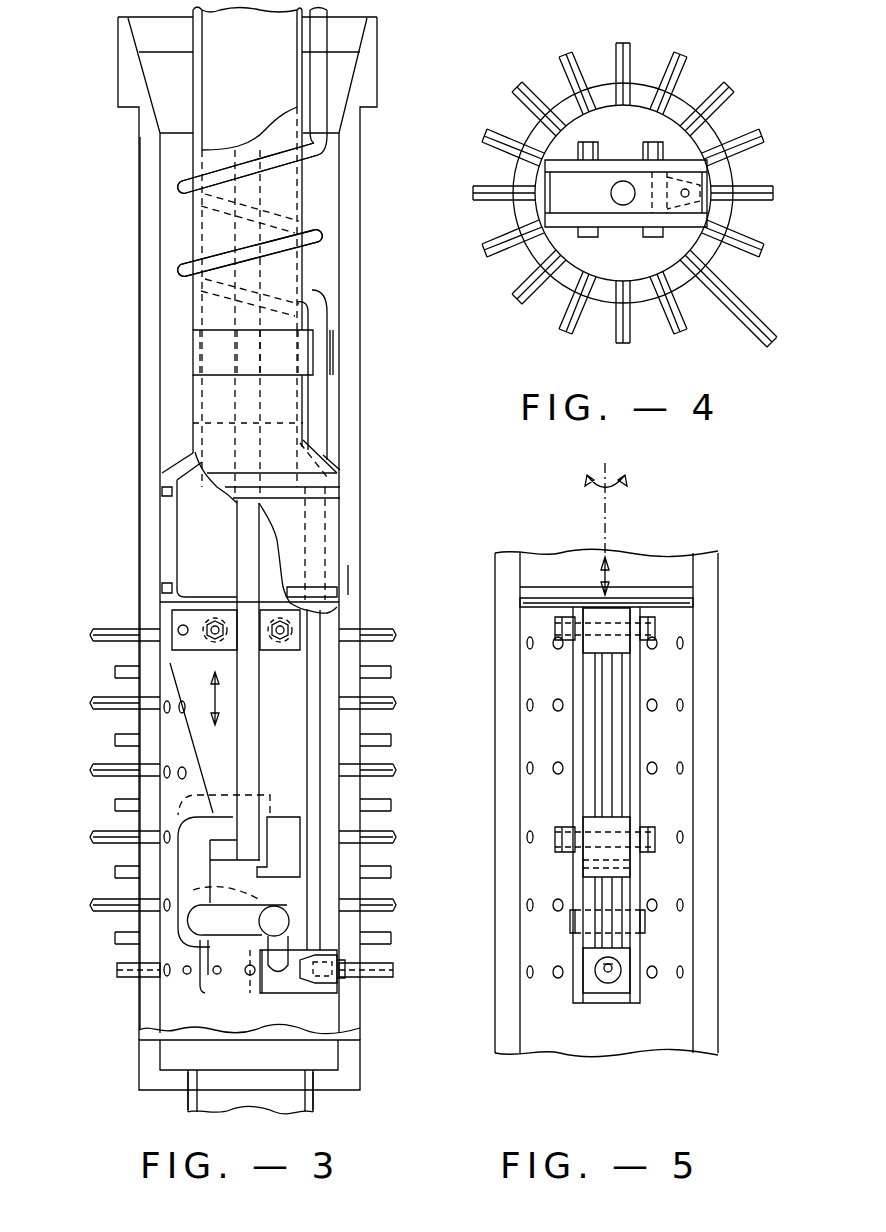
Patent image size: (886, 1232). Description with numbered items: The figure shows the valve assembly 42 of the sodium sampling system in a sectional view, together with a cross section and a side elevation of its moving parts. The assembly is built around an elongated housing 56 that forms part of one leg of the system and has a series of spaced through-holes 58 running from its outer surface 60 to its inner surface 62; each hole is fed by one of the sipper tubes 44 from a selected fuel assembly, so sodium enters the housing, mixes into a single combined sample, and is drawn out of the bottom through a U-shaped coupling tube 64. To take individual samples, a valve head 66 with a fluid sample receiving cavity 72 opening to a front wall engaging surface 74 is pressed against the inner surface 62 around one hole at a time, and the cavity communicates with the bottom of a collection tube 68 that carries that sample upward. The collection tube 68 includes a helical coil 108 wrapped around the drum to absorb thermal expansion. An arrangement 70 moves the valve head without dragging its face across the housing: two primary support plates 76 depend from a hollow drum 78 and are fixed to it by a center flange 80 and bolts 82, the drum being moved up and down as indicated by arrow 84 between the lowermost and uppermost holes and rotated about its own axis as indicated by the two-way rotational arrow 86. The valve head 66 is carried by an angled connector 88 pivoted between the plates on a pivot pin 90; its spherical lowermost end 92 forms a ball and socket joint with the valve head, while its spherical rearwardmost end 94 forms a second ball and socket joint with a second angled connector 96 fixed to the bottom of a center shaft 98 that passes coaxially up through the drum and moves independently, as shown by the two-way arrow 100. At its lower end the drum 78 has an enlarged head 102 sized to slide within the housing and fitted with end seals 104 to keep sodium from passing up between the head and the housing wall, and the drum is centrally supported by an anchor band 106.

In FIG. 3, the valve assembly 42 is at (422, 551).
In FIG. 3, the sipper tubes 44 is at (393, 640).
In FIG. 4, the sipper tubes 44 is at (630, 340).
In FIG. 3, the elongated housing 56 is at (355, 418).
In FIG. 4, the elongated housing 56 is at (602, 297).
In FIG. 3, the through-holes 58 is at (182, 774).
In FIG. 3, the outer surface 60 is at (362, 604).
In FIG. 3, the inner surface 62 is at (165, 727).
In FIG. 3, the U-shaped coupling tube 64 is at (313, 1106).
In FIG. 3, the valve head 66 is at (281, 995).
In FIG. 3, the collection tube 68 is at (265, 680).
In FIG. 3, the arrangement for moving the valve head 70 is at (174, 958).
In FIG. 3, the fluid sample receiving cavity 72 is at (316, 985).
In FIG. 3, the front wall engaging surface 74 is at (336, 985).
In FIG. 5, the front wall engaging surface 74 is at (623, 988).
In FIG. 4, the primary support plates 76 is at (622, 163).
In FIG. 5, the primary support plates 76 is at (573, 804).
In FIG. 3, the drum 78 is at (305, 273).
In FIG. 5, the drum 78 is at (685, 578).
In FIG. 5, the center flange 80 is at (623, 647).
In FIG. 5, the bolts 82 is at (650, 632).
In FIG. 5, the arrow 84 is at (605, 574).
In FIG. 5, the two-way rotational arrow 86 is at (587, 492).
In FIG. 3, the angled connector 88 is at (232, 915).
In FIG. 5, the pivot pin 90 is at (645, 923).
In FIG. 3, the lowermost end 92 is at (292, 972).
In FIG. 3, the rearwardmost end 94 is at (205, 930).
In FIG. 3, the second angled connector 96 is at (185, 855).
In FIG. 3, the shaft 98 is at (245, 664).
In FIG. 3, the two-way arrow 100 is at (207, 693).
In FIG. 3, the enlarged head 102 is at (330, 490).
In FIG. 3, the end seals 104 is at (160, 588).
In FIG. 3, the anchor band 106 is at (205, 350).
In FIG. 3, the helical section or coil 108 is at (182, 187).